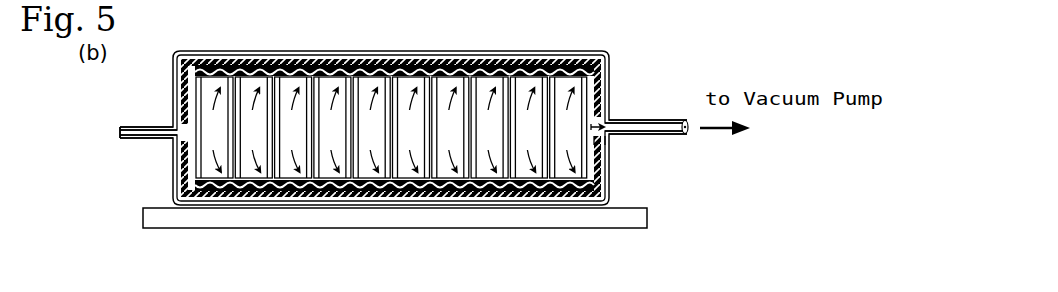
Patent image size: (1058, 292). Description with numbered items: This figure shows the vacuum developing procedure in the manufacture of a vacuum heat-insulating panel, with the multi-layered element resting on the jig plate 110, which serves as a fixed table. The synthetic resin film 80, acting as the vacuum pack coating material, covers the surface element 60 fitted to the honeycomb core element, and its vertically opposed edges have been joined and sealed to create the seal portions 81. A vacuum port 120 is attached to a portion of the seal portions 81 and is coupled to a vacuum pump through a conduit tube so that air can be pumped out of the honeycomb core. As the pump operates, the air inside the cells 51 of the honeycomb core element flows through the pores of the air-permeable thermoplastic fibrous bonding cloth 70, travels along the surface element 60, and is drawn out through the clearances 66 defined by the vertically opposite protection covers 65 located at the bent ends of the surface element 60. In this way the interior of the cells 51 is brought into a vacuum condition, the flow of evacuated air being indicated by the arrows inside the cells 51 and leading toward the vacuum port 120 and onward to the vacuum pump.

The cells 51 is at (460, 80).
The surface element 60 is at (322, 62).
The protection covers 65 is at (606, 184).
The clearances 66 is at (612, 118).
The thermoplastic fibrous bonding cloth 70 is at (254, 66).
The synthetic resin film 80 is at (611, 100).
The seal portions 81 is at (133, 140).
The jig plate 110 is at (228, 220).
The vacuum port 120 is at (615, 140).